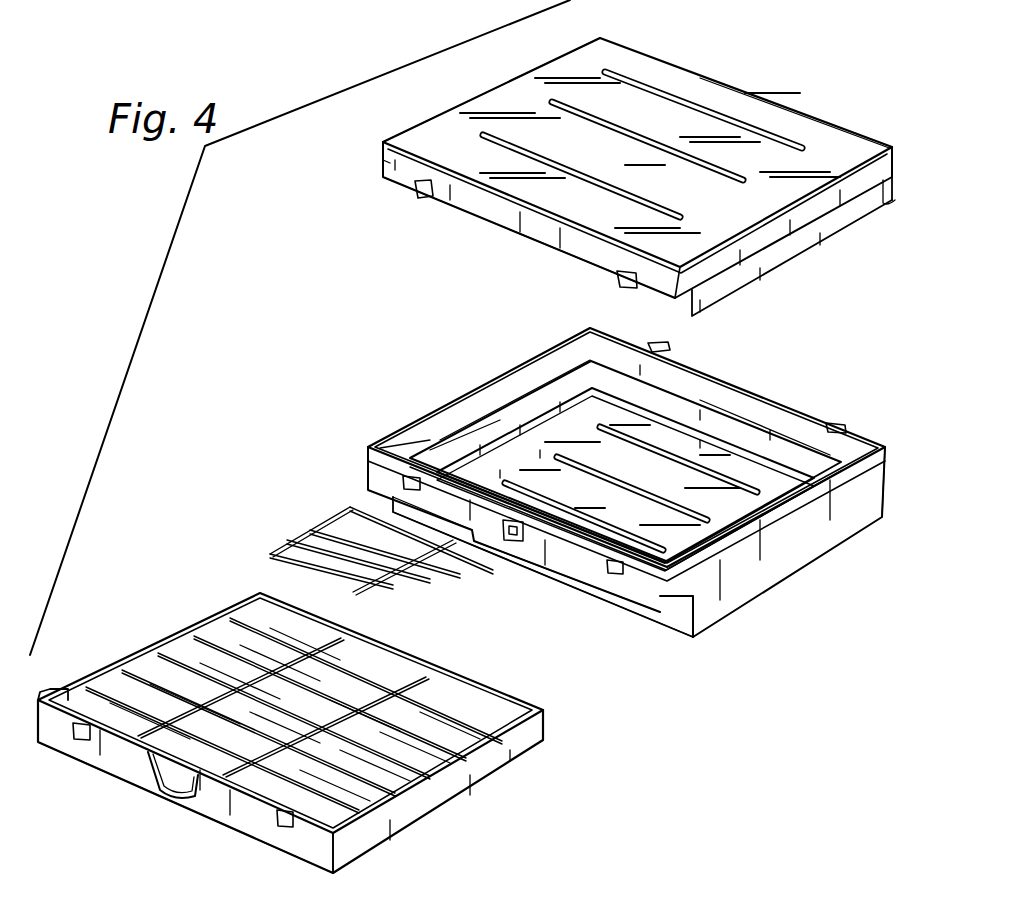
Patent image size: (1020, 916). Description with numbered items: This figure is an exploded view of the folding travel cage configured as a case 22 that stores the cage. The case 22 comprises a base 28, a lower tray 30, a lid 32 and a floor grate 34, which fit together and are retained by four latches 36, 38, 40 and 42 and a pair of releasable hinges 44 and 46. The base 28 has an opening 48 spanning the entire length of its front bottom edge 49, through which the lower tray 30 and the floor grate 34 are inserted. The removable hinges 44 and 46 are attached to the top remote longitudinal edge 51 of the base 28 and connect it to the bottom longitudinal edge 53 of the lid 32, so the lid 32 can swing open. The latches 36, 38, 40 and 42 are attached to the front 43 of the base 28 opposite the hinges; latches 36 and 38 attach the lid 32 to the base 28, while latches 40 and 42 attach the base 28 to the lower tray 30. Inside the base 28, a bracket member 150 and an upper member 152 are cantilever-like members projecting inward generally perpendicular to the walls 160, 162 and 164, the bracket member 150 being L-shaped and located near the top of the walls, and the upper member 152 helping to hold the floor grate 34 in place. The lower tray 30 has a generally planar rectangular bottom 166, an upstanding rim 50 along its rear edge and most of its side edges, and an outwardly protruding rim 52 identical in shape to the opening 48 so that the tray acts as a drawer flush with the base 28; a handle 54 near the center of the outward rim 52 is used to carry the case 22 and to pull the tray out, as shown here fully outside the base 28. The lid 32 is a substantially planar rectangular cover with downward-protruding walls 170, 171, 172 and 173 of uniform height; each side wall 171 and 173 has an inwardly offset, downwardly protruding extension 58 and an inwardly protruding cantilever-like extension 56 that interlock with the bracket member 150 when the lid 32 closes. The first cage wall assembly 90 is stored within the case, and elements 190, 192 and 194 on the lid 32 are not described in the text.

The case 22 is at (300, 277).
The base 28 is at (634, 509).
The lower tray 30 is at (316, 742).
The lid 32 is at (615, 337).
The floor grate 34 is at (432, 567).
The latch 36 is at (423, 198).
The latch 38 is at (617, 280).
The latch 40 is at (83, 742).
The latch 42 is at (284, 830).
The front of the base 43 is at (551, 550).
The releasable hinge 44 is at (667, 351).
The releasable hinge 46 is at (838, 425).
The opening 48 is at (581, 580).
The front bottom edge 49 is at (675, 640).
The upstanding rim 50 is at (517, 742).
The top remote longitudinal edge 51 is at (768, 400).
The outwardly protruding rim 52 is at (235, 813).
The bottom longitudinal edge 53 is at (870, 197).
The handle 54 is at (170, 783).
The cantilever-like extension 56 is at (832, 228).
The downwardly protruding extension 58 is at (378, 173).
The first cage wall assembly 90 is at (190, 683).
The bracket member 150 is at (427, 440).
The upper member 152 is at (487, 430).
The wall of the base 160 is at (500, 387).
The wall of the base 162 is at (710, 420).
The wall of the base 164 is at (830, 528).
The bottom 166 is at (372, 750).
The lid wall 170 is at (533, 227).
The lid side wall 171 is at (765, 238).
The lid wall 172 is at (813, 117).
The lid side wall 173 is at (472, 105).
The slot 190 is at (483, 135).
The slot 192 is at (600, 122).
The slot 194 is at (640, 82).